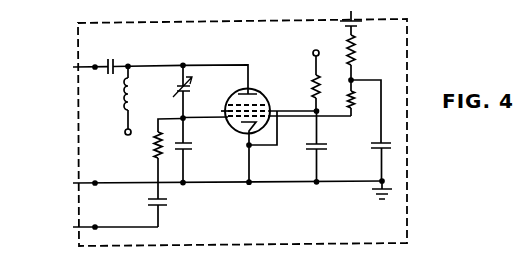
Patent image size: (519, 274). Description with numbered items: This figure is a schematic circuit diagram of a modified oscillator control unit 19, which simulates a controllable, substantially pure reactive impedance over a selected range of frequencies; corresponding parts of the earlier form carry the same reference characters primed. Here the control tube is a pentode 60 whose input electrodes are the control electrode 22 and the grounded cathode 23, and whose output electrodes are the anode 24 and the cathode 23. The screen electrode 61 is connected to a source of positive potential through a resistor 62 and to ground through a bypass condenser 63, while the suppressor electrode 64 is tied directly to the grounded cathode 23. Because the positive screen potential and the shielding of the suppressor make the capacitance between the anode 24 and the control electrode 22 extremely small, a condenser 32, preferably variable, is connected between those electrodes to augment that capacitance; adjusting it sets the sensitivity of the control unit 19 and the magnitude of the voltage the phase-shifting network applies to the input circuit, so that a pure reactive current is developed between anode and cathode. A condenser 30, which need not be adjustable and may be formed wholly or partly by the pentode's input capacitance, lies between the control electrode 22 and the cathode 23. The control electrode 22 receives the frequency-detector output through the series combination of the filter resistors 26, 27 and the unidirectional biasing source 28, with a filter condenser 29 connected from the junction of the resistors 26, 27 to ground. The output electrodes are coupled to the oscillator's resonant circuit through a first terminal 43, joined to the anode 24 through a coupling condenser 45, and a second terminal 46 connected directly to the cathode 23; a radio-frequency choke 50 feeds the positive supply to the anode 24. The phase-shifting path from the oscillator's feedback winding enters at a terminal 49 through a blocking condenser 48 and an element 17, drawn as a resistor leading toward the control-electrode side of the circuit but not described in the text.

The control unit 19 is at (80, 45).
The first terminal 43 is at (94, 64).
The coupling condenser 45 is at (116, 60).
The radio-frequency choke 50 is at (124, 96).
The condenser 32 is at (176, 91).
The control electrode 22 is at (222, 116).
The anode 24 is at (243, 90).
The pentode 60 is at (267, 123).
The screen electrode 61 is at (223, 111).
The suppressor electrode 64 is at (272, 105).
The cathode 23 is at (243, 135).
The cathode resistor 17 is at (156, 148).
The condenser 30 is at (191, 148).
The blocking condenser 48 is at (167, 202).
The terminal 49 is at (95, 226).
The second terminal 46 is at (95, 182).
The resistor 62 is at (319, 84).
The bypass condenser 63 is at (320, 150).
The unidirectional source of biasing potential 28 is at (360, 31).
The filter resistor 27 is at (355, 55).
The filter resistor 26 is at (353, 101).
The filter condenser 29 is at (386, 141).